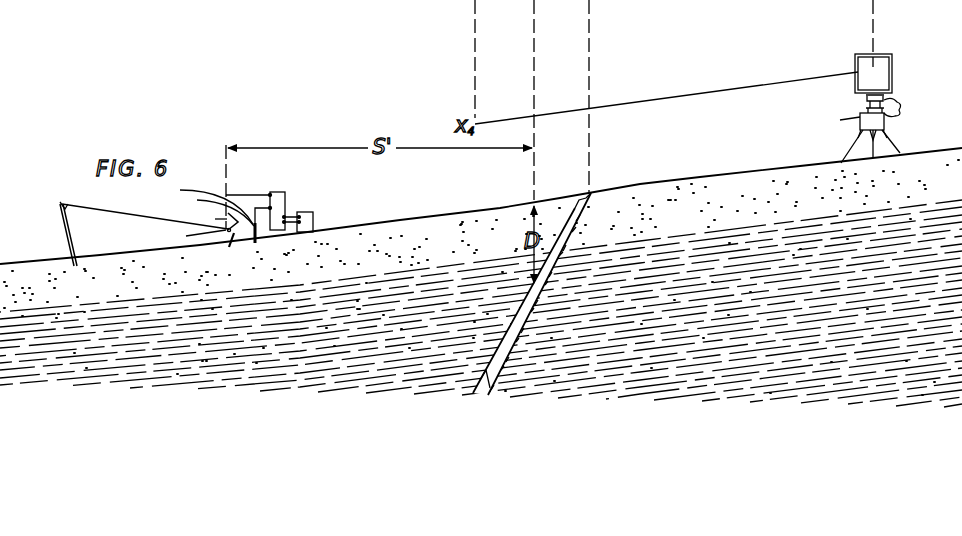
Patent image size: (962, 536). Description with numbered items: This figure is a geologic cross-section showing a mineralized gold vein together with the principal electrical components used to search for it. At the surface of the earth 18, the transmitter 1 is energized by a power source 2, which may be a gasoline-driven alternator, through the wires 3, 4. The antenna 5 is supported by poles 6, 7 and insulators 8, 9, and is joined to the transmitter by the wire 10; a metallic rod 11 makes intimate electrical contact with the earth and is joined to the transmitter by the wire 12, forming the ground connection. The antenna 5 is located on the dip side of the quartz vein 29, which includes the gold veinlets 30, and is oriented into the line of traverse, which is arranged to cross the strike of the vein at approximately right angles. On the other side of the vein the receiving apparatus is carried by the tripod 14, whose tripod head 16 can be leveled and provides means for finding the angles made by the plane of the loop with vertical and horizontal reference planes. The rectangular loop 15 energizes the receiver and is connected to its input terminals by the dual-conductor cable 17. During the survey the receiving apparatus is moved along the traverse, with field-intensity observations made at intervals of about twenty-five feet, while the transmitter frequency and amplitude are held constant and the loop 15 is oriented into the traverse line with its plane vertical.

The transmitter 1 is at (279, 193).
The power source 2 is at (310, 212).
The wire 3 is at (290, 215).
The wire 4 is at (297, 217).
The antenna 5 is at (141, 217).
The pole 6 is at (218, 217).
The pole 7 is at (65, 229).
The insulator 8 is at (200, 237).
The insulator 9 is at (60, 192).
The wire 10 is at (248, 194).
The metallic rod 11 is at (211, 208).
The wire 12 is at (202, 199).
The tripod 14 is at (887, 131).
The rectangular loop 15 is at (855, 62).
The tripod head 16 is at (864, 98).
The dual-conductor cable 17 is at (897, 107).
The surface of the earth 18 is at (487, 206).
The quartz vein 29 is at (590, 231).
The gold veinlets 30 is at (486, 370).